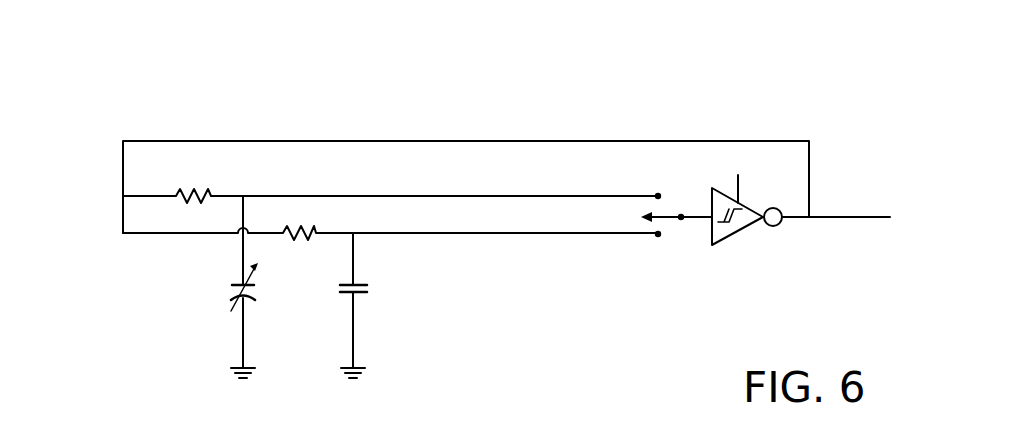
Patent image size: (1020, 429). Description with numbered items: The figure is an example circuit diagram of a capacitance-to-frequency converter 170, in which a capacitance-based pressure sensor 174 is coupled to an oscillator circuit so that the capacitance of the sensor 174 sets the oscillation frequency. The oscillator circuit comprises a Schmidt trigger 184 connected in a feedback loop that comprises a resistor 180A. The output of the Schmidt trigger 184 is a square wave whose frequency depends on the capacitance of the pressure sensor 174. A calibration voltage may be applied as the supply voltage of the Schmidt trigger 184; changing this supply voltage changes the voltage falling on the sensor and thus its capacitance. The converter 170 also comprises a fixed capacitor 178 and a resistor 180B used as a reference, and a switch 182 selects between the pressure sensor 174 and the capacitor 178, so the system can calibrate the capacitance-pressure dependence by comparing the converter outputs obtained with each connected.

The capacitance-to-frequency converter 170 is at (120, 110).
The capacitance-based pressure sensor 174 is at (241, 278).
The fixed capacitor 178 is at (360, 294).
The resistor 180A is at (190, 158).
The resistor 180B is at (309, 240).
The switch 182 is at (672, 222).
The Schmidt trigger 184 is at (732, 238).